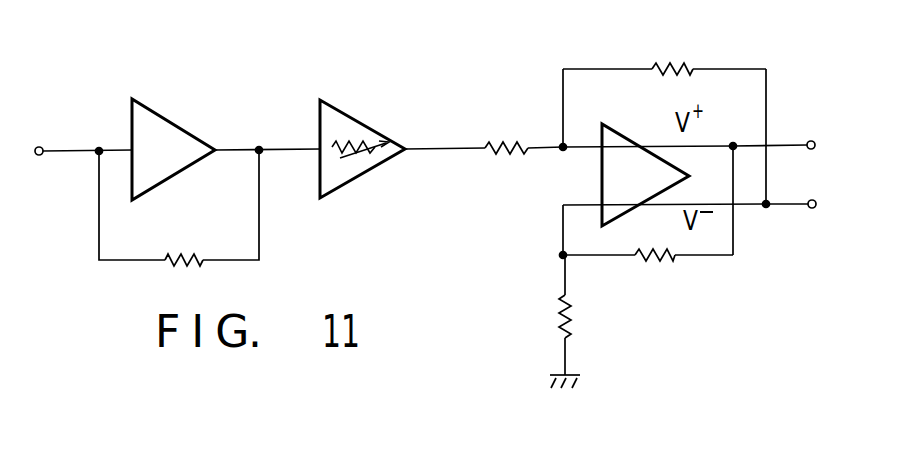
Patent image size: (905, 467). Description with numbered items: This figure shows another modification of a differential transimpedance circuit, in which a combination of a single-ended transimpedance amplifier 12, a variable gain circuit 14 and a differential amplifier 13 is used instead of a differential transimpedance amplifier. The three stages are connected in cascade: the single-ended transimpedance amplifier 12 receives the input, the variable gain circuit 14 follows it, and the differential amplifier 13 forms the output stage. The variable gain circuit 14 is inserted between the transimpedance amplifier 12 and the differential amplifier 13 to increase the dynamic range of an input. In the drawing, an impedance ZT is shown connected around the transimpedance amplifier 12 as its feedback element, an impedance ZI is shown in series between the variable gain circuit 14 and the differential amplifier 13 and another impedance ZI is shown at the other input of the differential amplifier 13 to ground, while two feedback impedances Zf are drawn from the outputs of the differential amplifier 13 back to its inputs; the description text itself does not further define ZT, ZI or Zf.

The single-ended transimpedance amplifier 12 is at (191, 133).
The variable gain circuit 14 is at (369, 128).
The differential amplifier 13 is at (624, 137).
The feedback impedance ZT is at (183, 250).
The input impedance ZI is at (553, 318).
The feedback impedance Zf is at (668, 56).